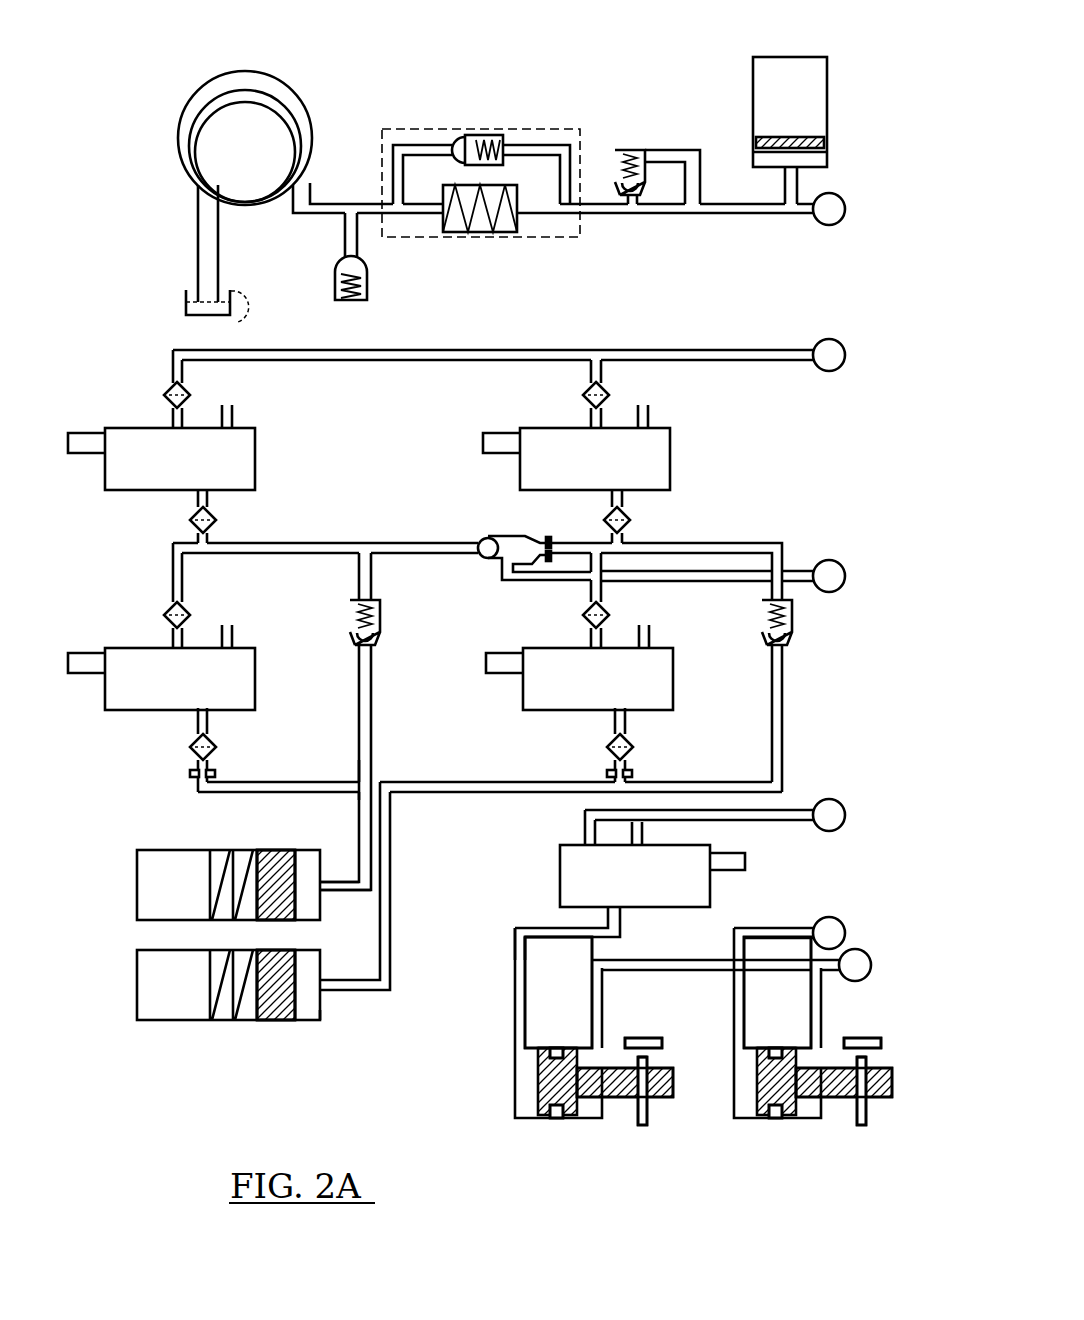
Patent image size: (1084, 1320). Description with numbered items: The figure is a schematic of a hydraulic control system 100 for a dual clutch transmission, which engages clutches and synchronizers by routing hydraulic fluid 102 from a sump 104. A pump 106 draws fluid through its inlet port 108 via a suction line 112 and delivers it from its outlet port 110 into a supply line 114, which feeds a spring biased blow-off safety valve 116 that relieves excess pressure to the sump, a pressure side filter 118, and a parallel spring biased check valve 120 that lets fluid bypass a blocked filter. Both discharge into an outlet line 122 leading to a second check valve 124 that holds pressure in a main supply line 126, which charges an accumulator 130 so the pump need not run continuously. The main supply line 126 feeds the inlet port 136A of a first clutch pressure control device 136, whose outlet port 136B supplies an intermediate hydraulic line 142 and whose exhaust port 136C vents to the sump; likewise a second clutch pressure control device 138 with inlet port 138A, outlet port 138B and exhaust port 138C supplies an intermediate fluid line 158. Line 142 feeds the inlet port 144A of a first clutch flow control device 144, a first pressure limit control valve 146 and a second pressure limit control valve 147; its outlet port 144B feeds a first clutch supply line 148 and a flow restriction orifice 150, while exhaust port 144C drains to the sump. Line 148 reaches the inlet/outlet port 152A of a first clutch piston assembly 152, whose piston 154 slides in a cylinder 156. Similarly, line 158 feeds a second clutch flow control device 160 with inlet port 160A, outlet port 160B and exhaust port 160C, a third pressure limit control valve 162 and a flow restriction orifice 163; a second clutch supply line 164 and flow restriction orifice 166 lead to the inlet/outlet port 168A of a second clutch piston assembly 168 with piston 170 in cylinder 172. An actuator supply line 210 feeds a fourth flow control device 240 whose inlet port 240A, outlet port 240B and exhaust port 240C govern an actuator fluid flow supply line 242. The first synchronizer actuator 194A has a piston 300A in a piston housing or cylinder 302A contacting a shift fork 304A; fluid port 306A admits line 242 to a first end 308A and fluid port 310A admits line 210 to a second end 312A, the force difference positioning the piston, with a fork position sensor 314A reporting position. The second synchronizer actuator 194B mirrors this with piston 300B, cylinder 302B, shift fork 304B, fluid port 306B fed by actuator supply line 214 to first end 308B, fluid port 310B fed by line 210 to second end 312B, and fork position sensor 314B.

The hydraulic control system 100 is at (176, 50).
The hydraulic fluid 102 is at (240, 322).
The sump 104 is at (195, 292).
The pump 106 is at (297, 100).
The inlet port 108 is at (205, 200).
The outlet port 110 is at (312, 178).
The suction line 112 is at (214, 280).
The supply line 114 is at (331, 217).
The spring biased blow-off safety valve 116 is at (369, 281).
The pressure side filter 118 is at (495, 234).
The spring biased check valve 120 is at (485, 133).
The outlet line 122 is at (603, 215).
The second check valve 124 is at (649, 182).
The main supply line 126 is at (751, 216).
The accumulator 130 is at (808, 70).
The first clutch pressure control device 136 is at (258, 451).
The inlet port 136A is at (172, 426).
The outlet port 136B is at (196, 491).
The exhaust port 136C is at (235, 416).
The second clutch pressure control device 138 is at (676, 463).
The inlet port 138A is at (590, 426).
The outlet port 138B is at (610, 491).
The exhaust port 138C is at (650, 419).
The intermediate hydraulic line 142 is at (300, 544).
The first clutch flow control device 144 is at (258, 670).
The inlet port 144A is at (172, 646).
The outlet port 144B is at (196, 711).
The exhaust port 144C is at (235, 636).
The first pressure limit control valve 146 is at (382, 625).
The second pressure limit control valve 147 is at (480, 539).
The first clutch supply line 148 is at (300, 783).
The flow restriction orifice 150 is at (190, 776).
The first clutch piston assembly 152 is at (132, 886).
The inlet/outlet port 152A is at (333, 893).
The piston 154 is at (280, 921).
The cylinder 156 is at (324, 875).
The intermediate fluid line 158 is at (743, 544).
The second clutch flow control device 160 is at (678, 683).
The inlet port 160A is at (590, 646).
The outlet port 160B is at (613, 711).
The exhaust port 160C is at (652, 636).
The third pressure limit control valve 162 is at (796, 632).
The flow restriction orifice 163 is at (528, 566).
The second clutch supply line 164 is at (610, 772).
The flow restriction orifice 166 is at (634, 775).
The second clutch piston assembly 168 is at (132, 991).
The inlet/outlet port 168A is at (330, 993).
The piston 170 is at (280, 955).
The cylinder 172 is at (328, 1020).
The first synchronizer actuator 194A is at (563, 1127).
The second synchronizer actuator 194B is at (782, 1127).
The actuator supply line 210 is at (801, 823).
The actuator supply line 214 is at (752, 928).
The fourth flow control device 240 is at (560, 882).
The inlet port 240A is at (584, 843).
The outlet port 240B is at (606, 911).
The exhaust port 240C is at (650, 838).
The actuator fluid flow supply line 242 is at (514, 952).
The piston 300A is at (550, 1049).
The piston 300B is at (770, 1049).
The piston housing or cylinder 302A is at (521, 1119).
The piston housing or cylinder 302B is at (740, 1119).
The shift fork 304A is at (648, 1128).
The shift fork 304B is at (868, 1128).
The fluid port 306A is at (540, 1052).
The fluid port 306B is at (759, 1052).
The first end 308A is at (536, 1090).
The first end 308B is at (735, 1088).
The fluid port 310A is at (600, 1035).
The fluid port 310B is at (820, 1035).
The second end 312A is at (565, 1120).
The second end 312B is at (784, 1120).
The fork position sensor 314A is at (663, 1040).
The fork position sensor 314B is at (882, 1040).